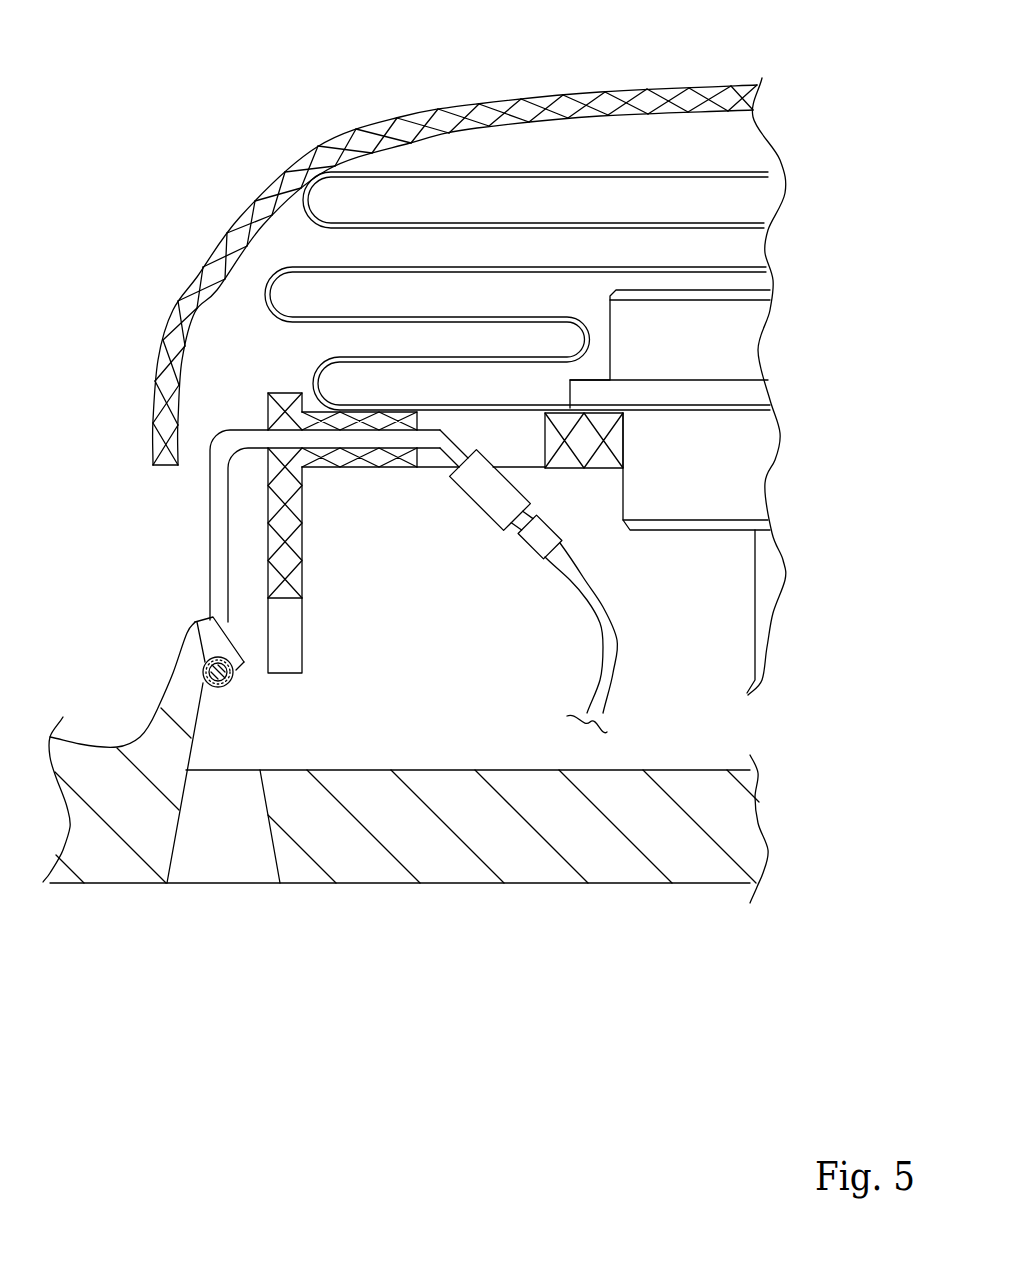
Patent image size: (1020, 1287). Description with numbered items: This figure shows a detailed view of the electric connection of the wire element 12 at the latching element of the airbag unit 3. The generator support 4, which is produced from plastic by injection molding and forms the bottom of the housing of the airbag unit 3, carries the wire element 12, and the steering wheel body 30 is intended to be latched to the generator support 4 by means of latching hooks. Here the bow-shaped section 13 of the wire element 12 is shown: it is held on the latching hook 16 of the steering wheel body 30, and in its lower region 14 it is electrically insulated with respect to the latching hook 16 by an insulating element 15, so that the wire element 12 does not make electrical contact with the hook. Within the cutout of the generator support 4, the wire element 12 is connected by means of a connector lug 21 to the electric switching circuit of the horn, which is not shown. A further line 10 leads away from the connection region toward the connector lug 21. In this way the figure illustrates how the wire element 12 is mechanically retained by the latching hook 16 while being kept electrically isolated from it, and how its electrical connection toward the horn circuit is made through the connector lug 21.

The airbag unit 3 is at (318, 122).
The wire element 12 is at (305, 438).
The generator support 4 is at (290, 483).
The bow-shaped section 13 is at (225, 530).
The latching hook 16 is at (205, 640).
The lower region 14 is at (203, 663).
The insulating element 15 is at (207, 683).
The connecting line 10 is at (440, 448).
The connector lug 21 is at (485, 497).
The steering wheel body 30 is at (315, 904).